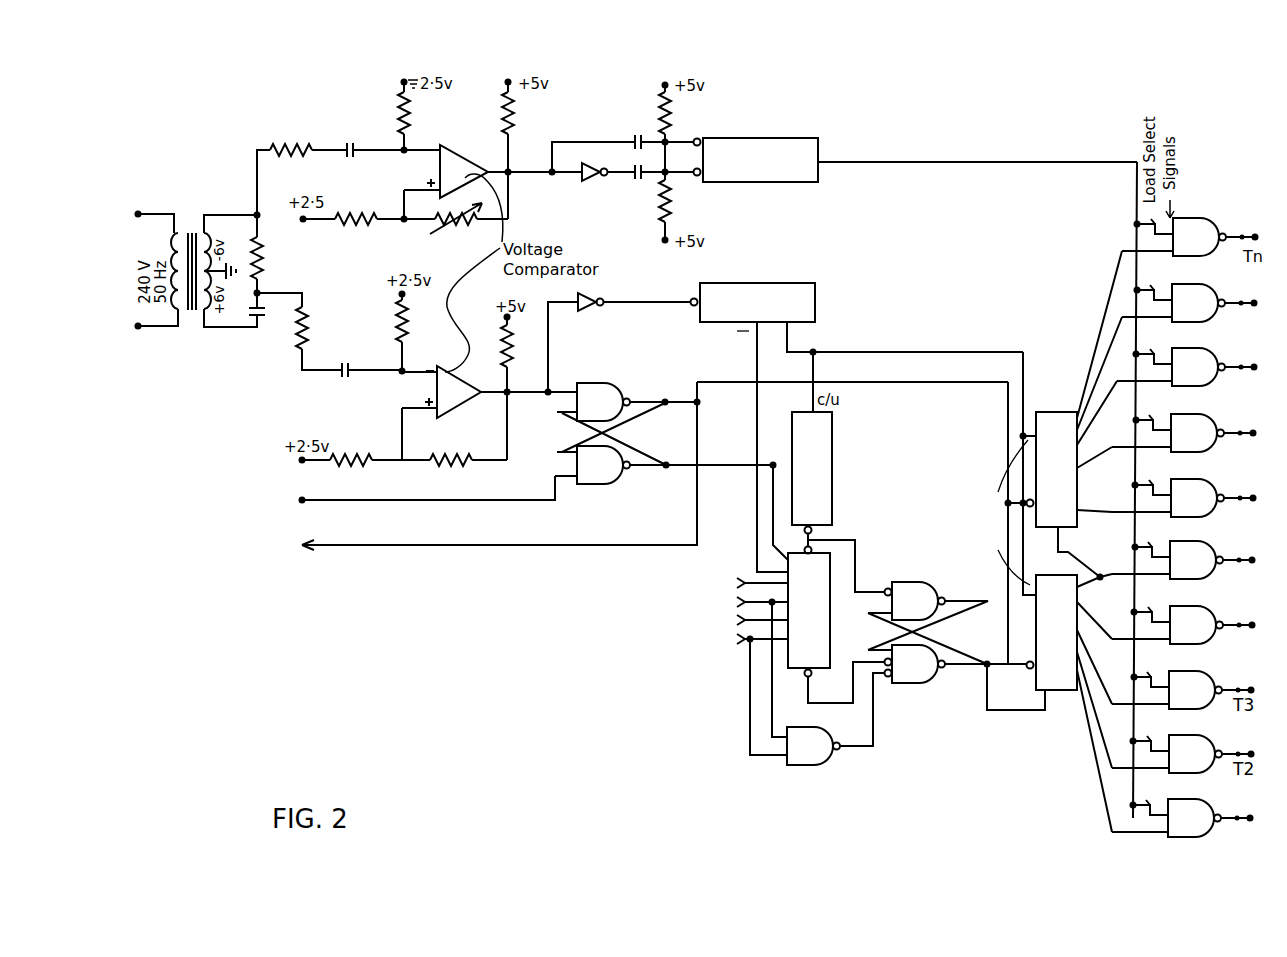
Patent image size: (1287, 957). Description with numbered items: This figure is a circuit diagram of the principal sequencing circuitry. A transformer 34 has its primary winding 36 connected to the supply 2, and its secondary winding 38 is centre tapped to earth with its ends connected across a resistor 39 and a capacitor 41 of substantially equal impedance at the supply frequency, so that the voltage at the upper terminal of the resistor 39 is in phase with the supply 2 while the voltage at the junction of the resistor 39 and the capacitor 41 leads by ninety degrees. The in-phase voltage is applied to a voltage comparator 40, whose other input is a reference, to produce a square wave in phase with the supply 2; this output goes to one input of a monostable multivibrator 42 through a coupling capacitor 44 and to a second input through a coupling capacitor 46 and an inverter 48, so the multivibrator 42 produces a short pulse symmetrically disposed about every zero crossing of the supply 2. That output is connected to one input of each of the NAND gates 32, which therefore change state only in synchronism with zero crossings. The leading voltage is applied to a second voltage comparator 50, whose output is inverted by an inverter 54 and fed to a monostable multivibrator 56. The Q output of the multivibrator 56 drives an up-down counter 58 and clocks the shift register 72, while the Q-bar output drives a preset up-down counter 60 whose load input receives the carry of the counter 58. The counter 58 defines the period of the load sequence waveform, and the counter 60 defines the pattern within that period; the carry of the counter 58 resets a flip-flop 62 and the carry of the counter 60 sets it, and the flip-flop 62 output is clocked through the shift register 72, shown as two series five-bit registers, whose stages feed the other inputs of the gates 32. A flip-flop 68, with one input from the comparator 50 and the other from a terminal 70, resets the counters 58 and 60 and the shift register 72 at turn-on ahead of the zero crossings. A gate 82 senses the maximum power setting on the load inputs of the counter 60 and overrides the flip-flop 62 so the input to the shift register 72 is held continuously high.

The supply 2 is at (156, 212).
The transformer 34 is at (197, 224).
The primary winding 36 is at (182, 316).
The secondary winding 38 is at (204, 316).
The resistor 39 is at (258, 247).
The capacitor 41 is at (262, 320).
The voltage comparator 40 is at (446, 150).
The coupling capacitor 44 is at (636, 138).
The inverter 48 is at (584, 183).
The coupling capacitor 46 is at (637, 181).
The monostable multivibrator 42 is at (818, 152).
The inverter 54 is at (590, 308).
The monostable multivibrator 56 is at (815, 302).
The flip-flop 68 is at (594, 377).
The second voltage comparator 50 is at (442, 411).
The terminal 70 is at (308, 504).
The up-down counter 58 is at (832, 495).
The preset up-down counter 60 is at (832, 576).
The flip-flop 62 is at (914, 581).
The gate 82 is at (822, 764).
The shift register 72 is at (1045, 712).
The NAND gate 32 is at (1186, 800).